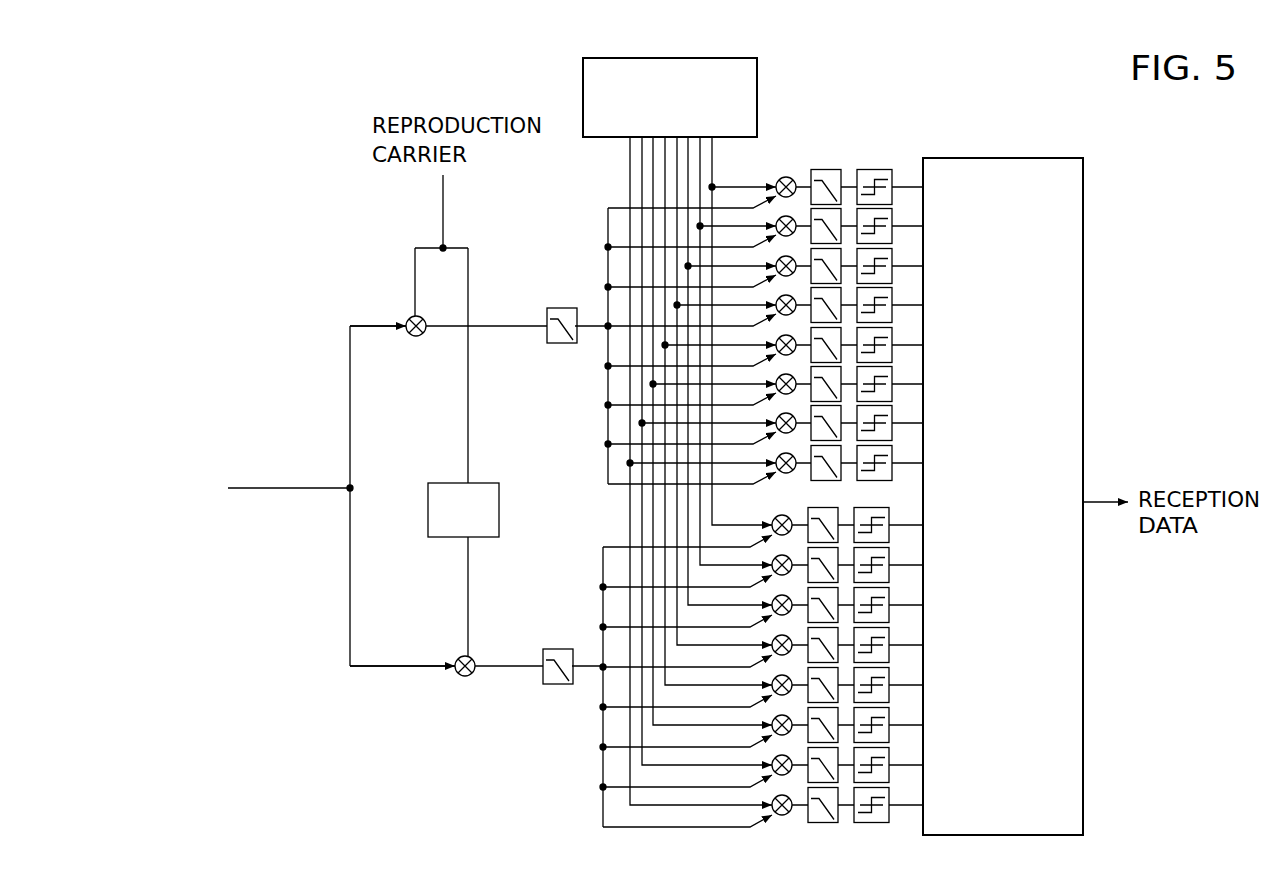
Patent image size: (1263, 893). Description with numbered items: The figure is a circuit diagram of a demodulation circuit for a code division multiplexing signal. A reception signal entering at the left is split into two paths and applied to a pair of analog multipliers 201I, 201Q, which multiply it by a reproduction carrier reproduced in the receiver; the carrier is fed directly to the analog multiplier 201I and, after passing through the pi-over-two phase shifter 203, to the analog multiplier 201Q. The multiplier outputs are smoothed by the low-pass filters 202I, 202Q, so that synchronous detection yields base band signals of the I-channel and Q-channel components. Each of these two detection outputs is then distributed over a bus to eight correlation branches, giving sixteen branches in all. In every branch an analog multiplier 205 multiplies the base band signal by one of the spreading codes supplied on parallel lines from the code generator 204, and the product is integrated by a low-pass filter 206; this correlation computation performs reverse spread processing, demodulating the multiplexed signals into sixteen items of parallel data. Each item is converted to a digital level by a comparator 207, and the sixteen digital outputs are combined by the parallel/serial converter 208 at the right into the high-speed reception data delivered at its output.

The analog multiplier 201I is at (418, 337).
The analog multiplier 201Q is at (462, 677).
The low-pass filter 202I is at (557, 308).
The low-pass filter 202Q is at (555, 649).
The π/2 phase shifter 203 is at (432, 538).
The code generator 204 is at (757, 78).
The analog multiplier 205 is at (794, 178).
The low-pass filter 206 is at (835, 168).
The comparator 207 is at (880, 166).
The parallel/serial converter 208 is at (1004, 157).